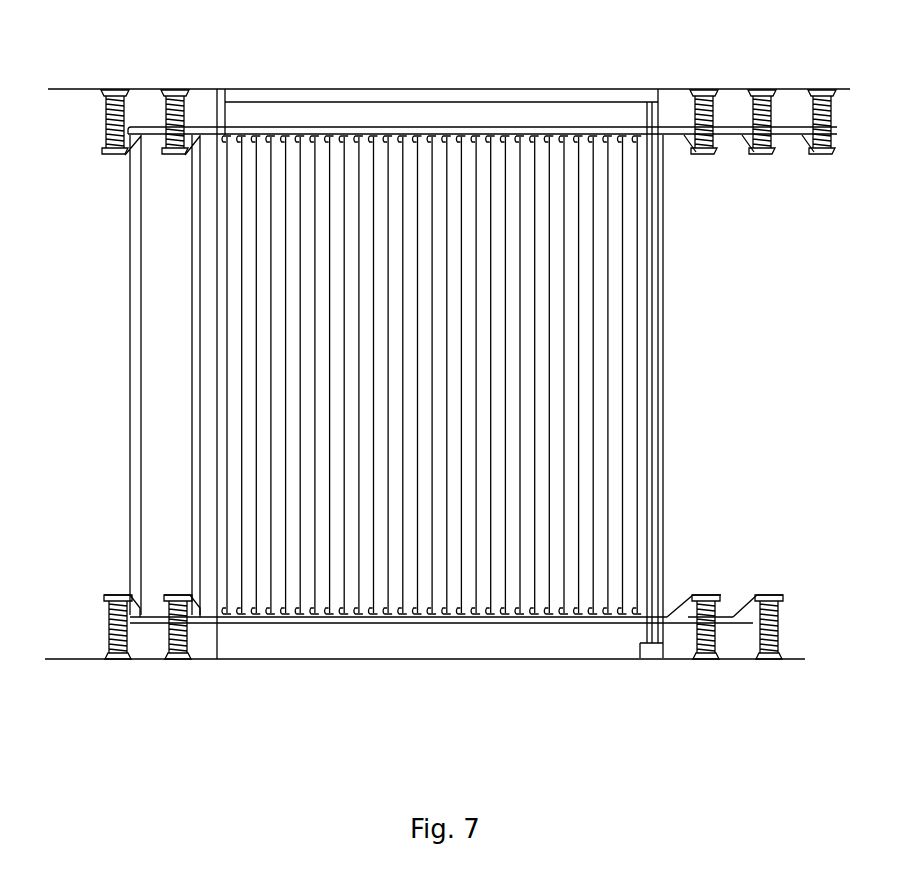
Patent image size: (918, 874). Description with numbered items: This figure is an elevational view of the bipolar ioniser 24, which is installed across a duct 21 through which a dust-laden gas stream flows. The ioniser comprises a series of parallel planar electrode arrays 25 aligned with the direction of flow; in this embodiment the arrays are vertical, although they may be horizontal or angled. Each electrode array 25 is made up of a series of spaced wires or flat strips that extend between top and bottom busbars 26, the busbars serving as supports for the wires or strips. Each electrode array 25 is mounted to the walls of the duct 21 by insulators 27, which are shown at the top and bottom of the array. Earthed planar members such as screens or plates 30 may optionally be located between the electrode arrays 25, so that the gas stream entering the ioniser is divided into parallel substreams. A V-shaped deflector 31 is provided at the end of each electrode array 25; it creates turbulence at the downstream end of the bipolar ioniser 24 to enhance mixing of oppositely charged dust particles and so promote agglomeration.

The duct 21 is at (310, 89).
The bipolar ioniser 24 is at (748, 264).
The electrode array 25 is at (625, 347).
The busbar 26 is at (499, 100).
The insulator 27 is at (185, 98).
The earthed planar member 30 is at (425, 100).
The V-shaped deflector 31 is at (190, 448).